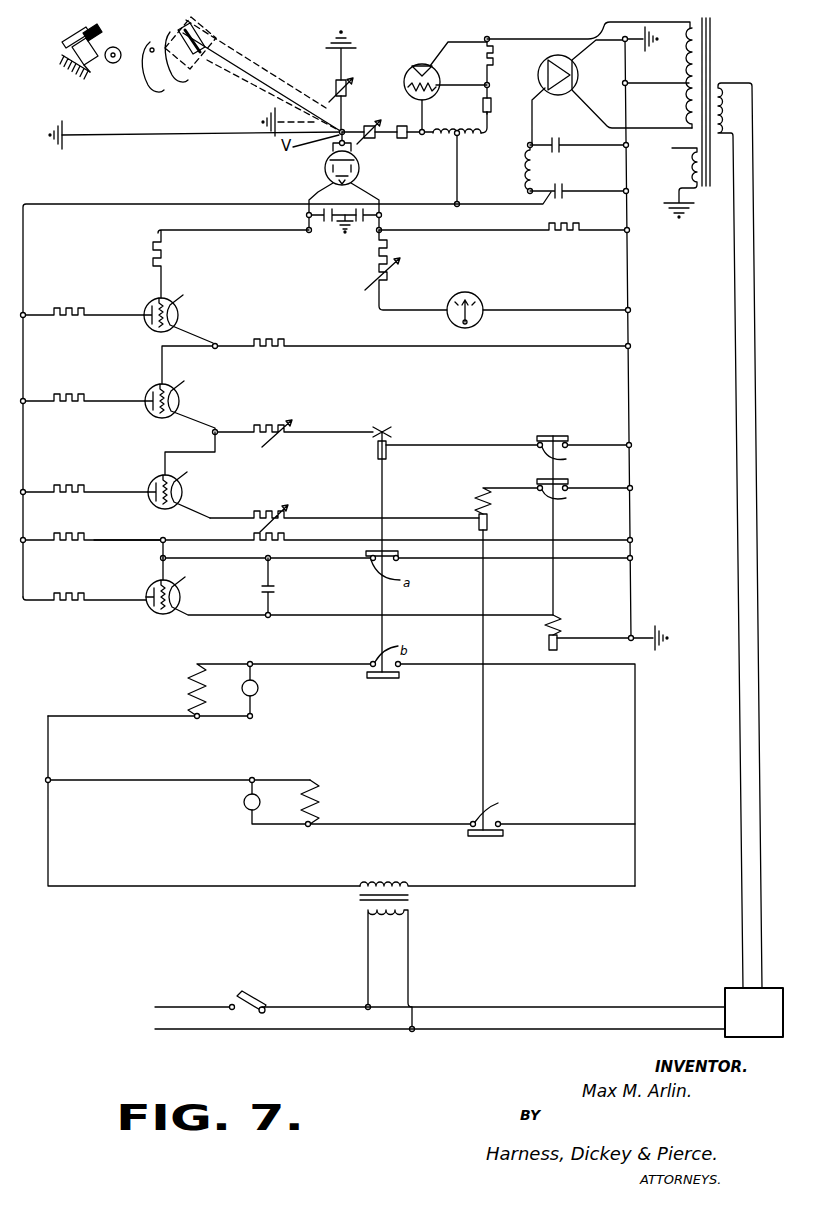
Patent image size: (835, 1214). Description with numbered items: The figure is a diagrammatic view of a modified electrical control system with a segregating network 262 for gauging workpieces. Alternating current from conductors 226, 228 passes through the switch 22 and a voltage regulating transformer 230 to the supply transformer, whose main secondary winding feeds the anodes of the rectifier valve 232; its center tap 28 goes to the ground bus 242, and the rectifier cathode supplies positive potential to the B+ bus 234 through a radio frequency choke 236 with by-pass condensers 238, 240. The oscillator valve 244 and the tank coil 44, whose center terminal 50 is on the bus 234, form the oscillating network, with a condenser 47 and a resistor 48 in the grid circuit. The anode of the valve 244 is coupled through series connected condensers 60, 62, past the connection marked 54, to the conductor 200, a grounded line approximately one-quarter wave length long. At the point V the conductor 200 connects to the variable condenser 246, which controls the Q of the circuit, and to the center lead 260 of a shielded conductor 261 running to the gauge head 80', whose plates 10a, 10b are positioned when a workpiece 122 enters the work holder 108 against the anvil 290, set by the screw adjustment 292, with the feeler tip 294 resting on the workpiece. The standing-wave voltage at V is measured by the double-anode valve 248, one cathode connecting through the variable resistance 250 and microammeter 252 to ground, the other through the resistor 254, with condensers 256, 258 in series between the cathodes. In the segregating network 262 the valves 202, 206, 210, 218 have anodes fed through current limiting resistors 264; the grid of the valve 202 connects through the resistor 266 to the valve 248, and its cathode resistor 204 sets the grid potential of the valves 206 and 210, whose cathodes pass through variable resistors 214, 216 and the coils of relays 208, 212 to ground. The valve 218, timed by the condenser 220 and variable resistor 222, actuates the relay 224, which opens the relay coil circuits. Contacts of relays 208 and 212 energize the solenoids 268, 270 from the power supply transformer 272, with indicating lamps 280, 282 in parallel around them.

The screw adjustment 292 is at (36, 47).
The work holder 108 is at (110, 35).
The feeler tip 294 is at (120, 53).
The workpiece 122 is at (113, 64).
The anvil 290 is at (92, 71).
The center terminal of tank coil 50 is at (163, 91).
The plate member 10a is at (177, 78).
The plate member 10b is at (198, 56).
The gauge head 80' is at (245, 62).
The shielded conductor 261 is at (274, 81).
The concentric center lead 260 is at (258, 80).
The conductor 200 is at (168, 137).
The ground bus 242 is at (60, 125).
The variable condenser 246 is at (335, 88).
The condenser 62 is at (377, 123).
The condenser 60 is at (399, 140).
The junction 54 is at (423, 135).
The tank coil 44 is at (458, 128).
The condenser 47 is at (492, 108).
The resistor 48 is at (494, 56).
The oscillator valve 244 is at (406, 70).
The rectifier valve 232 is at (577, 71).
The center tap 28 is at (688, 84).
The electric valve 248 is at (325, 168).
The radio frequency choke 236 is at (522, 170).
The by-pass condenser 238 is at (566, 122).
The by-pass condenser 240 is at (566, 188).
The B+ bus 234 is at (507, 206).
The condenser 256 is at (325, 229).
The condenser 258 is at (363, 225).
The variable resistance 250 is at (395, 257).
The microammeter 252 is at (449, 318).
The resistor 254 is at (558, 240).
The segregating network 262 is at (100, 238).
The resistor 266 is at (170, 268).
The current limiting resistors 264 is at (64, 328).
The electric valve 202 is at (164, 299).
The resistor 204 is at (270, 336).
The electric valve 206 is at (146, 391).
The variable resistor 214 is at (270, 414).
The electric valve 210 is at (180, 476).
The variable resistor 216 is at (266, 500).
The variable resistor 222 is at (82, 540).
The electric valve 218 is at (151, 585).
The condenser 220 is at (276, 592).
The relay 208 is at (389, 430).
The relay 212 is at (483, 487).
The relay 224 is at (560, 614).
The solenoid 268 is at (188, 690).
The indicating lamp 280 is at (259, 688).
The indicating lamp 282 is at (243, 803).
The solenoid 270 is at (326, 800).
The power supply transformer 272 is at (408, 905).
The switch 22 is at (252, 996).
The supply conductor 226 is at (193, 990).
The supply conductor 228 is at (203, 1033).
The voltage regulating transformer 230 is at (737, 995).